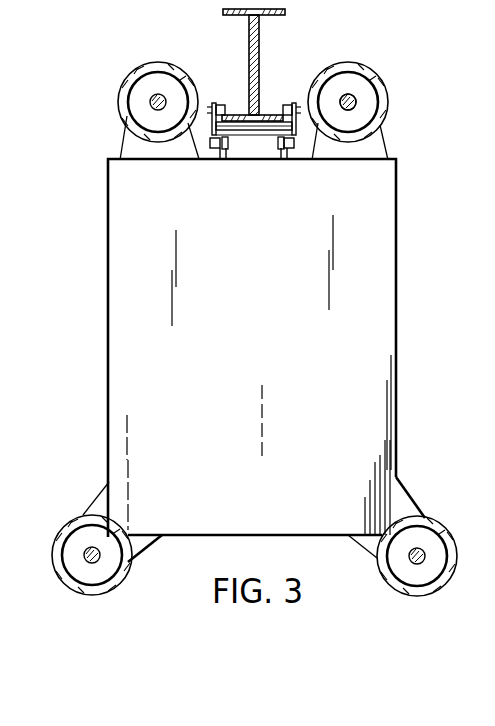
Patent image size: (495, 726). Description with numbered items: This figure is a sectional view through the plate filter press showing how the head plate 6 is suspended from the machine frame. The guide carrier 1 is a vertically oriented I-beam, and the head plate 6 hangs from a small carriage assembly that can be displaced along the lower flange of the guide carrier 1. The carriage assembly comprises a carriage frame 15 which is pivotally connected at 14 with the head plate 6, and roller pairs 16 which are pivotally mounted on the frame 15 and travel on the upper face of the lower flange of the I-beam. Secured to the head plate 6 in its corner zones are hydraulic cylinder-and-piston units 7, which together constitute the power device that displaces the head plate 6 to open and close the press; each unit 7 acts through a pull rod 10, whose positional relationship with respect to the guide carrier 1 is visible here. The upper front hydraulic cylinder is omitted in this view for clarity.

The guide carrier 1 is at (259, 41).
The head plate 6 is at (386, 213).
The hydraulic cylinder-and-piston unit 7 is at (388, 101).
The pull rod 10 is at (353, 97).
The pivotal connection 14 is at (287, 160).
The carriage frame 15 is at (207, 142).
The roller pairs 16 is at (226, 105).